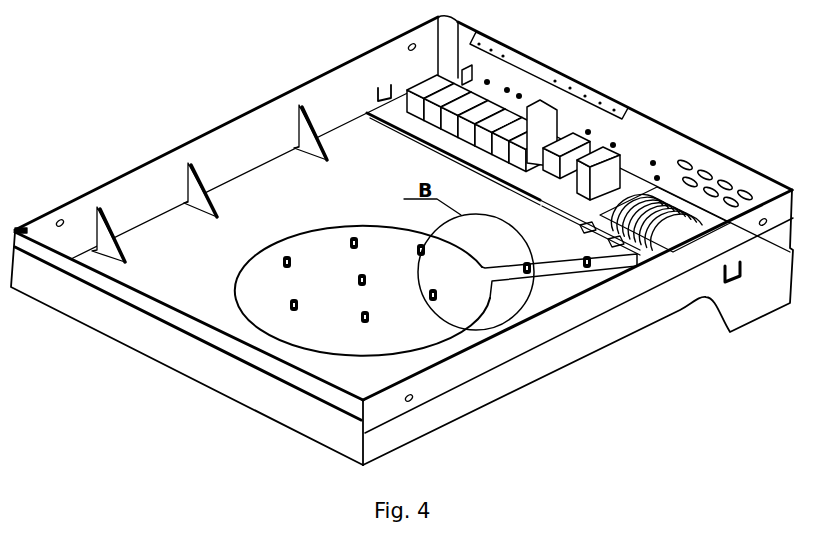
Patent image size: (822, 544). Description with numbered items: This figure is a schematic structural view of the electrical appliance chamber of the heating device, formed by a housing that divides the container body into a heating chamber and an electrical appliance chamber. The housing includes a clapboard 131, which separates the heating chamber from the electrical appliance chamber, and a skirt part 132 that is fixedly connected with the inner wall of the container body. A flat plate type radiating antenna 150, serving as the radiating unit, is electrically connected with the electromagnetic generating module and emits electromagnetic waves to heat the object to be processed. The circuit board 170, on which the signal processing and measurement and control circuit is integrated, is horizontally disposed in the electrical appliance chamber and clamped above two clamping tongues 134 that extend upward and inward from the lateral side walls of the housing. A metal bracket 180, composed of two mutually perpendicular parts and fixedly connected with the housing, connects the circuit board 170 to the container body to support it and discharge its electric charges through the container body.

The clapboard 131 is at (168, 237).
The skirt part 132 is at (541, 357).
The clamping tongue 134 is at (384, 92).
The flat plate type radiating antenna 150 is at (321, 247).
The circuit board 170 is at (628, 182).
The metal bracket 180 is at (543, 73).